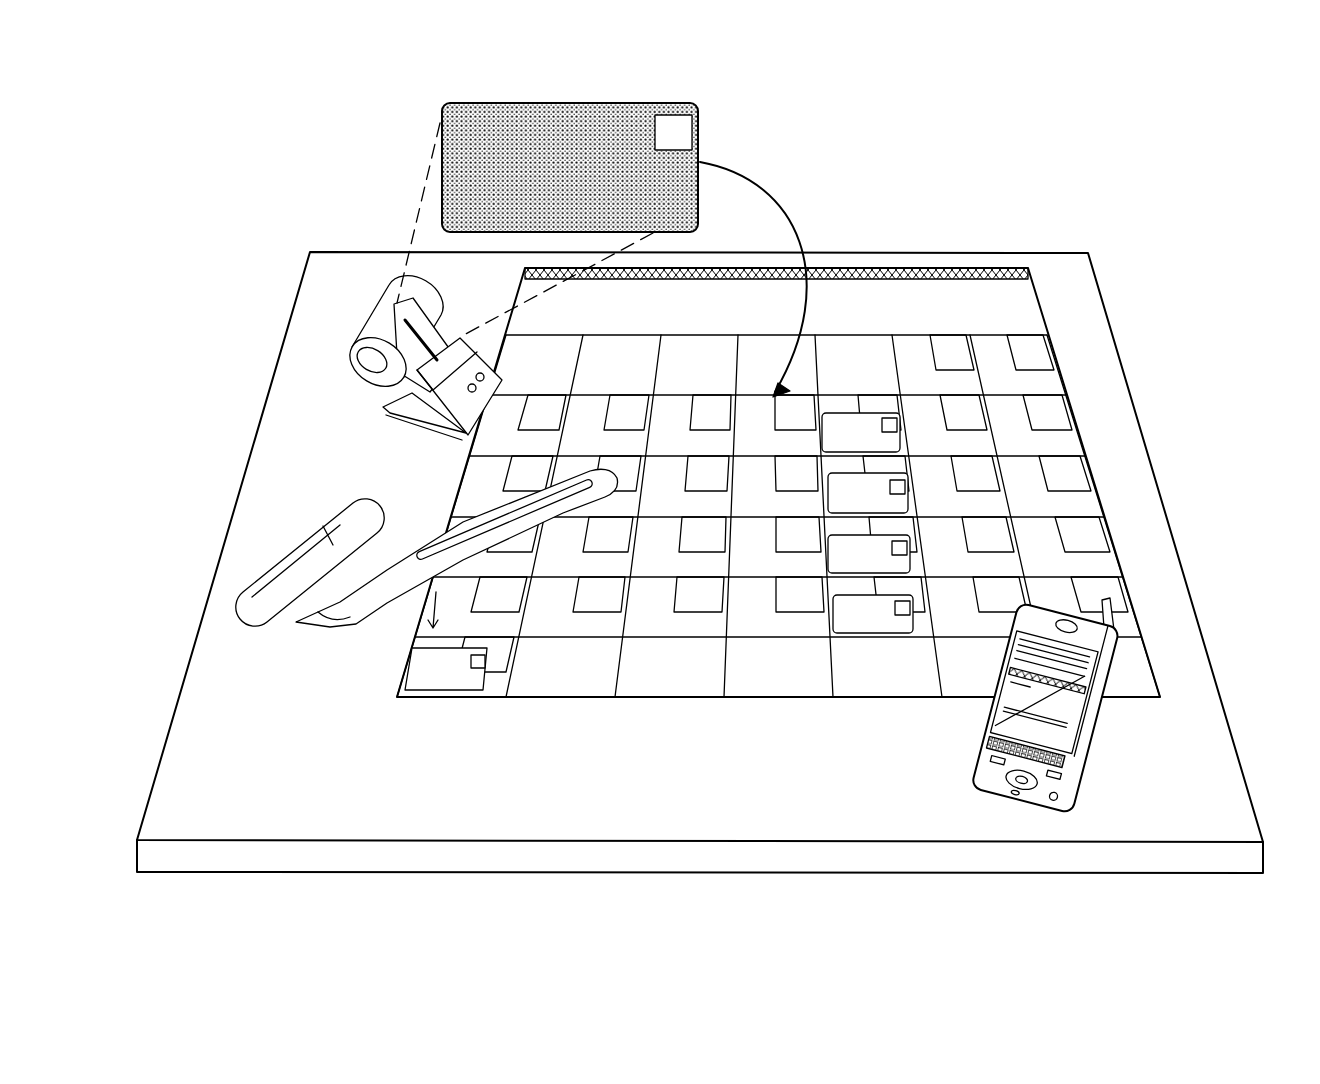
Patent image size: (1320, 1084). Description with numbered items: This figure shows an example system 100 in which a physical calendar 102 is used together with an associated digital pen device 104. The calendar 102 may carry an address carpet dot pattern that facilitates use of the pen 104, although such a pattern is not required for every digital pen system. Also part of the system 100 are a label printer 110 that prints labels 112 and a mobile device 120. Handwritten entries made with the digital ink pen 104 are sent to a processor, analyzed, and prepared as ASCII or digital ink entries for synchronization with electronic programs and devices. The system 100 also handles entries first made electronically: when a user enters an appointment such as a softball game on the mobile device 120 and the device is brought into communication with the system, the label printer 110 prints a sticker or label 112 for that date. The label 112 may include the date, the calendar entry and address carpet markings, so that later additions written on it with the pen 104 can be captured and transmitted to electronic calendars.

The system 100 is at (305, 222).
The physical calendar 102 is at (925, 268).
The digital pen device 104 is at (345, 619).
The label printer 110 is at (367, 375).
The label 112 is at (700, 148).
The mobile device 120 is at (1092, 725).